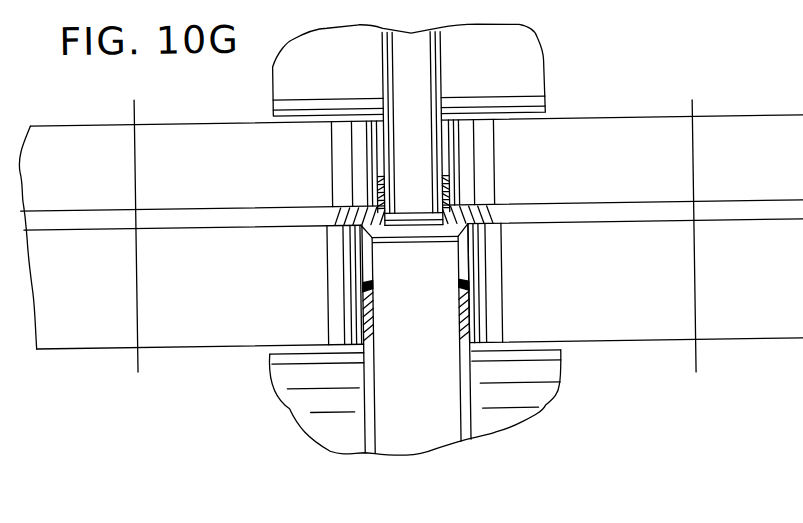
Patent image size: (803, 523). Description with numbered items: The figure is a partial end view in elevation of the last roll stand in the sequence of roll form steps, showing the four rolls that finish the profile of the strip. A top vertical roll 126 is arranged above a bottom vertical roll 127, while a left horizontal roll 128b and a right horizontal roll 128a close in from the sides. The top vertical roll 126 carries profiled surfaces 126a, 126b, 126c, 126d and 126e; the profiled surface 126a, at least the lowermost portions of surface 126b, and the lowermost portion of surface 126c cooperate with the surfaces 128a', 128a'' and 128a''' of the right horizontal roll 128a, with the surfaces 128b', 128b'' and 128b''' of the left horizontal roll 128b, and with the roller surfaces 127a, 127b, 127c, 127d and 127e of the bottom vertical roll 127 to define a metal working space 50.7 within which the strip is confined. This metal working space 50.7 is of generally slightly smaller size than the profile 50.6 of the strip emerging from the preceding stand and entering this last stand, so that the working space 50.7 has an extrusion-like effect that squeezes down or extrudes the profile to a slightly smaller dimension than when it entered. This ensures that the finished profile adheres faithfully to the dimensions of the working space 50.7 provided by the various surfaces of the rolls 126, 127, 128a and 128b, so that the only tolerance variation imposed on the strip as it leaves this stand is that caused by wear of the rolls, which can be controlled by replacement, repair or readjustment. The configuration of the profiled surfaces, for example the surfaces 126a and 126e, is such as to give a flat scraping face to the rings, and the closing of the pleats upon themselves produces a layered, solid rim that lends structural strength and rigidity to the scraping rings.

The top vertical roll 126 is at (500, 81).
The profiled surface 126a is at (383, 51).
The profiled surface 126b is at (393, 68).
The profiled surface 126c is at (413, 90).
The inner tube wall layer 126d is at (434, 40).
The profiled surface 126e is at (441, 54).
The bottom vertical roll 127 is at (423, 414).
The roller surface 127a is at (358, 300).
The roller surface 127b is at (374, 266).
The roller surface 127c is at (432, 240).
The roller surface 127d is at (460, 245).
The roller surface 127e is at (455, 296).
The right horizontal roll 128a is at (622, 236).
The surface 128a' is at (513, 165).
The surface 128a'' is at (522, 167).
The surface 128a''' is at (531, 282).
The left horizontal roll 128b is at (202, 234).
The surface 128b' is at (307, 168).
The surface 128b'' is at (304, 169).
The surface 128b''' is at (303, 285).
The strip profile 50.6 is at (410, 224).
The metal working space 50.7 is at (407, 242).